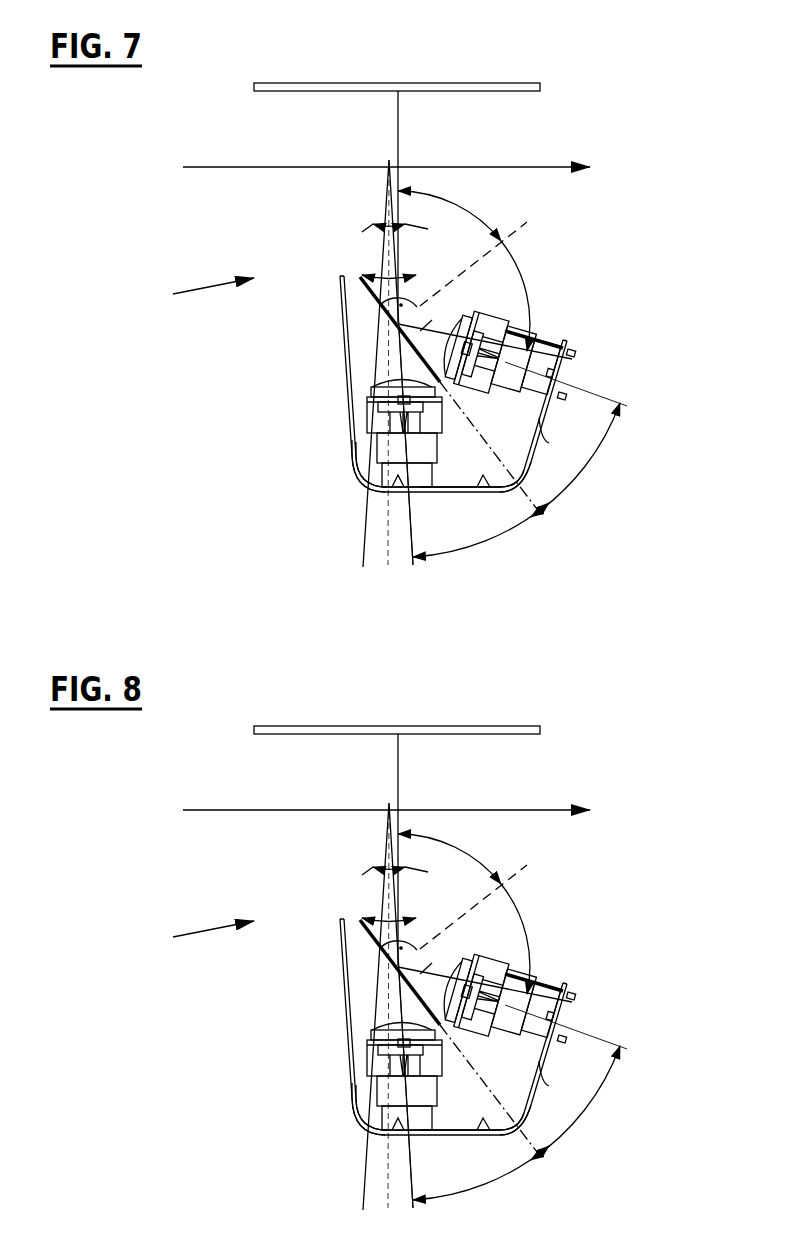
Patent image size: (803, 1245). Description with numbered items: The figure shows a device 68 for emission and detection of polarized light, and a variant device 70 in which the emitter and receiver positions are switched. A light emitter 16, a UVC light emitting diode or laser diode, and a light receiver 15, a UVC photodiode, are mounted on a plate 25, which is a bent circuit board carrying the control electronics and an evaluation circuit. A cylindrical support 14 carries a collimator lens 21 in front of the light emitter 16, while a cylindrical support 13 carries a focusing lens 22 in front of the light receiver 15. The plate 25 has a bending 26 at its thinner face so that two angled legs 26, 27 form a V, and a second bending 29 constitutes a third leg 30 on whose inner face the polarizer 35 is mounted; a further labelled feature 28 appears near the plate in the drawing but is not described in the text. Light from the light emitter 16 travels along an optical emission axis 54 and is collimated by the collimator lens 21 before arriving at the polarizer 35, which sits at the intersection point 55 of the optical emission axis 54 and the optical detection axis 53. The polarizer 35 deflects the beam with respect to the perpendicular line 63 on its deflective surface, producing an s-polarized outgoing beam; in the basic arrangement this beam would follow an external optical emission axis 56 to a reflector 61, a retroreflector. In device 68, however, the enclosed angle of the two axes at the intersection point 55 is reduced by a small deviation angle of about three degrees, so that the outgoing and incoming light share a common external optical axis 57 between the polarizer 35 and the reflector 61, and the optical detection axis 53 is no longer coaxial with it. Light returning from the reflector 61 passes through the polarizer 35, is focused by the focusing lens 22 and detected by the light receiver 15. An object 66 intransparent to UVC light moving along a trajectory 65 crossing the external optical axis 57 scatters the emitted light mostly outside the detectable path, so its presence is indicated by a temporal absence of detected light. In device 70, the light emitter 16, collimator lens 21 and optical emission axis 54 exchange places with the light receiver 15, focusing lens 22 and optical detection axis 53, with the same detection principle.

In FIG. 7, the reflector 61 is at (464, 84).
In FIG. 8, the reflector 61 is at (399, 697).
In FIG. 7, the external optical emission axis 56 is at (399, 125).
In FIG. 8, the external optical axis 57 is at (442, 850).
In FIG. 7, the object 66 is at (389, 160).
In FIG. 8, the object 66 is at (342, 982).
In FIG. 7, the trajectory 65 is at (537, 167).
In FIG. 8, the trajectory 65 is at (405, 777).
In FIG. 7, the perpendicular line 63 is at (522, 232).
In FIG. 8, the perpendicular line 63 is at (513, 906).
In FIG. 7, the polarizer 35 is at (361, 275).
In FIG. 8, the polarizer 35 is at (395, 1009).
In FIG. 7, the optical emission axis 54 is at (432, 320).
In FIG. 8, the optical emission axis 54 is at (334, 1089).
In FIG. 7, the optical detection axis 53 is at (398, 355).
In FIG. 8, the optical detection axis 53 is at (513, 923).
In FIG. 7, the device for emission and detection of polarized light 68 is at (198, 295).
In FIG. 8, the device for emission and detection of polarized light 70 is at (198, 938).
In FIG. 7, the intersection point 55 is at (398, 323).
In FIG. 8, the intersection point 55 is at (412, 966).
In FIG. 7, the collimator lens 21 is at (478, 308).
In FIG. 8, the collimator lens 21 is at (350, 1126).
In FIG. 7, the focusing lens 22 is at (350, 483).
In FIG. 8, the focusing lens 22 is at (546, 991).
In FIG. 7, the support 14 is at (510, 355).
In FIG. 8, the support 14 is at (347, 1141).
In FIG. 7, the support 13 is at (347, 498).
In FIG. 8, the support 13 is at (580, 1060).
In FIG. 7, the light emitter 16 is at (560, 367).
In FIG. 8, the light emitter 16 is at (382, 1152).
In FIG. 7, the light receiver 15 is at (382, 509).
In FIG. 8, the light receiver 15 is at (605, 1011).
In FIG. 7, the third leg 30 is at (343, 372).
In FIG. 8, the third leg 30 is at (411, 1027).
In FIG. 7, the second bending 29 is at (350, 483).
In FIG. 8, the second bending 29 is at (323, 1113).
In FIG. 7, the housing tab 28 is at (548, 443).
In FIG. 8, the housing tab 28 is at (597, 1109).
In FIG. 7, the bending 26 is at (528, 467).
In FIG. 8, the bending 26 is at (567, 1146).
In FIG. 7, the leg 27 is at (450, 490).
In FIG. 8, the leg 27 is at (481, 1184).
In FIG. 7, the plate 25 is at (484, 476).
In FIG. 8, the plate 25 is at (517, 1174).